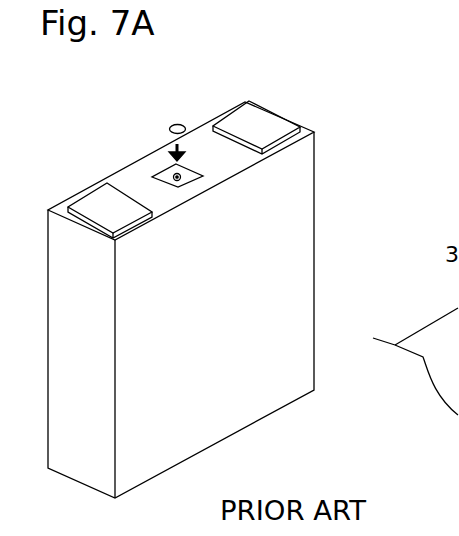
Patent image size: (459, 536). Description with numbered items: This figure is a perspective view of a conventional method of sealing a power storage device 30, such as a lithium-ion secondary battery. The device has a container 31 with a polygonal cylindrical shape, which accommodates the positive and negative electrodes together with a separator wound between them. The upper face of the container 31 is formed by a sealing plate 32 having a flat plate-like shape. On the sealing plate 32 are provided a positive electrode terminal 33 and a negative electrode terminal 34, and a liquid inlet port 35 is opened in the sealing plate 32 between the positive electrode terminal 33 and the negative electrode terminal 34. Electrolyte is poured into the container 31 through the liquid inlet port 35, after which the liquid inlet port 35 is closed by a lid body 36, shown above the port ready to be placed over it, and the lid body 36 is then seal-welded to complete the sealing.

The power storage device 30 is at (358, 169).
The container 31 is at (314, 263).
The sealing plate 32 is at (220, 157).
The positive electrode terminal 33 is at (93, 202).
The negative electrode terminal 34 is at (262, 121).
The liquid inlet port 35 is at (152, 175).
The lid body 36 is at (173, 124).